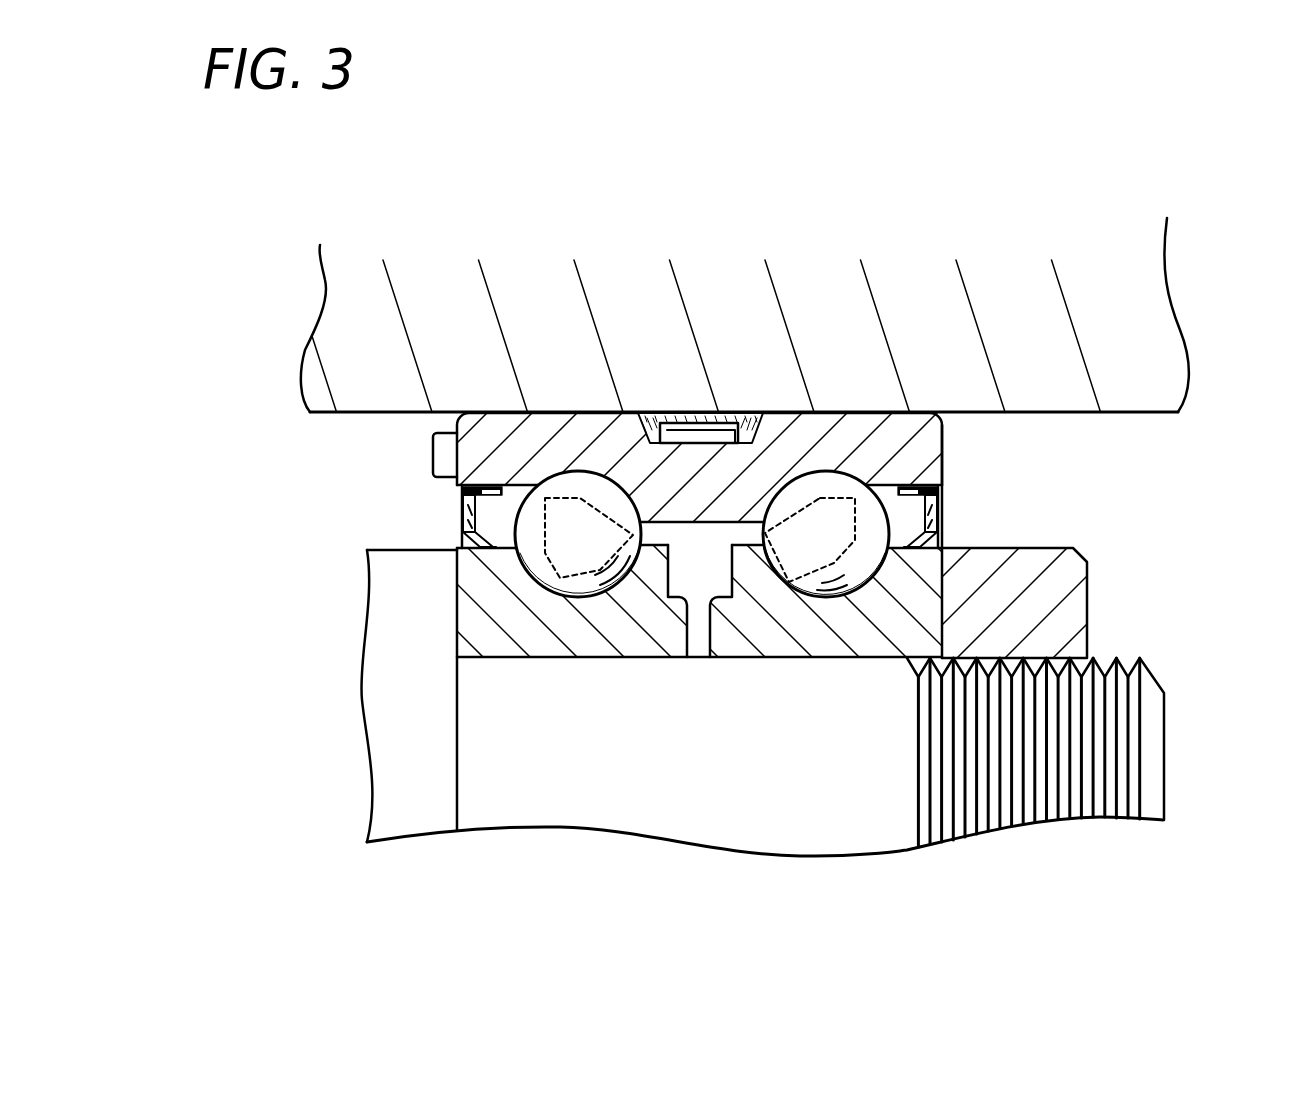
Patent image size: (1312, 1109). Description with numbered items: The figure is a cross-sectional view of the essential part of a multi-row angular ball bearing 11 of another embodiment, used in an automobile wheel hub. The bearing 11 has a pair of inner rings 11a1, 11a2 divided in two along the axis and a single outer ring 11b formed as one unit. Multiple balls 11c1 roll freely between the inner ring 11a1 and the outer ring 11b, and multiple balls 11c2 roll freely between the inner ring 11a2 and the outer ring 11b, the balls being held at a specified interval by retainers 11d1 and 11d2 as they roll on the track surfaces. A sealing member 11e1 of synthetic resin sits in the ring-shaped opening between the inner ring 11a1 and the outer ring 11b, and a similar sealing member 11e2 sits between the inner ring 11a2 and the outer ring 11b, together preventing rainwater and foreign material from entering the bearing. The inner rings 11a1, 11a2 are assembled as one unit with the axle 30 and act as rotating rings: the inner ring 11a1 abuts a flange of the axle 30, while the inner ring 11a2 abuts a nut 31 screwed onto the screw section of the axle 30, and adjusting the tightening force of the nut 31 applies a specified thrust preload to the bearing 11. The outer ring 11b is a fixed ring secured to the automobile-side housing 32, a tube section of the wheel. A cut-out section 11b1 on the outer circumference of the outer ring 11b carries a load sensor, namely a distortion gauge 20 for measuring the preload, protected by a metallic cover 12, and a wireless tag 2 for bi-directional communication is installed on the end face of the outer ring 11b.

The wireless tag 2 is at (432, 453).
The multi-row angular ball bearing 11 is at (762, 565).
The inner ring 11a1 is at (490, 638).
The inner ring 11a2 is at (860, 628).
The outer ring 11b is at (852, 428).
The cut-out section 11b1 is at (743, 412).
The balls 11c1 is at (553, 580).
The balls 11c2 is at (862, 594).
The retainer 11d1 is at (647, 570).
The retainer 11d2 is at (743, 563).
The sealing member 11e1 is at (457, 522).
The sealing member 11e2 is at (990, 517).
The metallic cover 12 is at (650, 412).
The distortion gauge 20 is at (677, 412).
The axle 30 is at (422, 802).
The nut 31 is at (1018, 618).
The housing 32 is at (1142, 325).